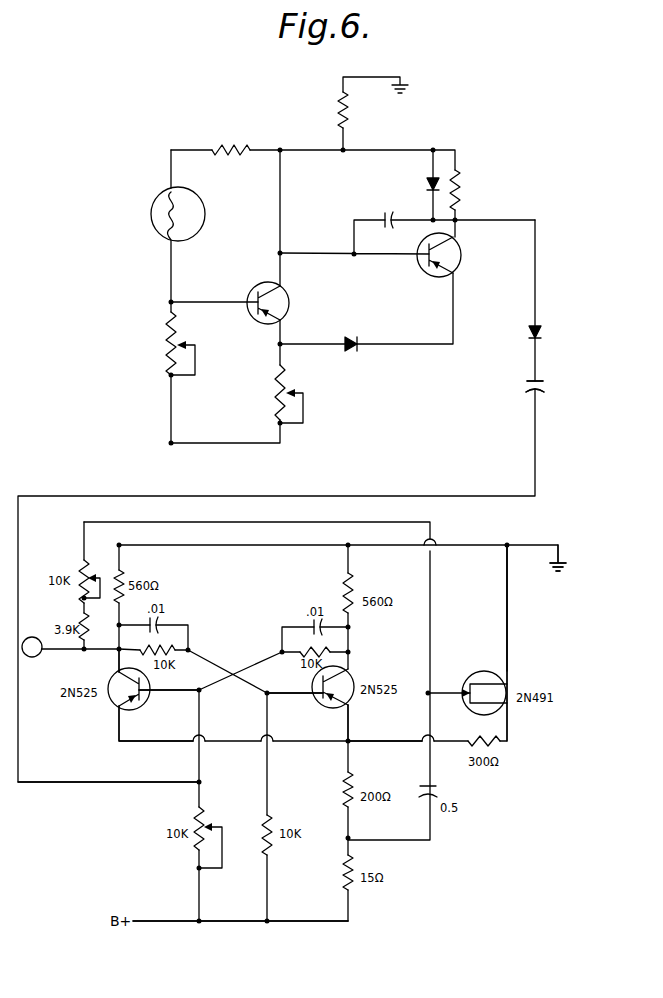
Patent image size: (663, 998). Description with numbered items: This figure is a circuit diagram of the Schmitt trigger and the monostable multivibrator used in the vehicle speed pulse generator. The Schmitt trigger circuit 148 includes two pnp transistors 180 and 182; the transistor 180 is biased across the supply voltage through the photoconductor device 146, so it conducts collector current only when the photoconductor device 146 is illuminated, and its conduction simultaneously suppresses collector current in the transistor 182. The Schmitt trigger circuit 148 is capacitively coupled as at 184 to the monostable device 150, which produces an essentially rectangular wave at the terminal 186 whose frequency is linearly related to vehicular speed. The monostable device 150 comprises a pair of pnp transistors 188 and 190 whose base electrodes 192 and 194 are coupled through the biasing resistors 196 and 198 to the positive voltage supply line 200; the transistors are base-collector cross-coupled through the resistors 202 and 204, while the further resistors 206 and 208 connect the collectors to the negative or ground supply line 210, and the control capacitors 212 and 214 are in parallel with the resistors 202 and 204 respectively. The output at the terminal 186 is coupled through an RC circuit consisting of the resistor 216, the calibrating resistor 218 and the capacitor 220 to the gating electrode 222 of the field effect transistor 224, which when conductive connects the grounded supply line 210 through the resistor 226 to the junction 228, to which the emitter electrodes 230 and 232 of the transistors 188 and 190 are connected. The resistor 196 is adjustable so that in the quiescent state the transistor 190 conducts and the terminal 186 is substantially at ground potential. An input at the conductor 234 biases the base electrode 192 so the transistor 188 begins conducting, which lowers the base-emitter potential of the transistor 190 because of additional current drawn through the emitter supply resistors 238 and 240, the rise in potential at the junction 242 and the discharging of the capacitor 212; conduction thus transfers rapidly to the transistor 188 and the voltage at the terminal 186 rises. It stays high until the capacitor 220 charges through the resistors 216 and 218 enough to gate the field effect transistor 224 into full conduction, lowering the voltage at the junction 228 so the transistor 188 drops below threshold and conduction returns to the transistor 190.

The photoconductor device 146 is at (205, 212).
The Schmitt trigger circuit 148 is at (513, 167).
The monostable device 150 is at (541, 648).
The pnp transistor 180 is at (285, 291).
The pnp transistor 182 is at (440, 277).
The capacitive coupling 184 is at (546, 381).
The terminal 186 is at (37, 658).
The pnp transistor 188 is at (113, 704).
The pnp transistor 190 is at (352, 676).
The base electrode 192 is at (152, 692).
The base electrode 194 is at (296, 695).
The biasing resistor 196 is at (203, 812).
The biasing resistor 198 is at (270, 820).
The positive voltage supply line 200 is at (243, 923).
The resistor 202 is at (178, 654).
The resistor 204 is at (308, 647).
The resistor 206 is at (128, 590).
The resistor 208 is at (353, 591).
The ground supply line 210 is at (555, 546).
The control capacitor 212 is at (162, 628).
The control capacitor 214 is at (352, 620).
The resistor 216 is at (82, 626).
The calibrating resistor 218 is at (82, 565).
The capacitor 220 is at (438, 786).
The gating electrode 222 is at (452, 690).
The field effect transistor 224 is at (502, 672).
The resistor 226 is at (505, 746).
The junction 228 is at (352, 740).
The emitter electrode 230 is at (128, 741).
The emitter electrode 232 is at (352, 722).
The conductor 234 is at (131, 784).
The emitter supply resistor 238 is at (352, 784).
The emitter supply resistor 240 is at (356, 860).
The junction 242 is at (117, 653).